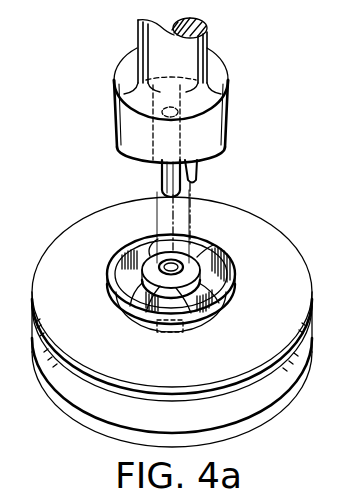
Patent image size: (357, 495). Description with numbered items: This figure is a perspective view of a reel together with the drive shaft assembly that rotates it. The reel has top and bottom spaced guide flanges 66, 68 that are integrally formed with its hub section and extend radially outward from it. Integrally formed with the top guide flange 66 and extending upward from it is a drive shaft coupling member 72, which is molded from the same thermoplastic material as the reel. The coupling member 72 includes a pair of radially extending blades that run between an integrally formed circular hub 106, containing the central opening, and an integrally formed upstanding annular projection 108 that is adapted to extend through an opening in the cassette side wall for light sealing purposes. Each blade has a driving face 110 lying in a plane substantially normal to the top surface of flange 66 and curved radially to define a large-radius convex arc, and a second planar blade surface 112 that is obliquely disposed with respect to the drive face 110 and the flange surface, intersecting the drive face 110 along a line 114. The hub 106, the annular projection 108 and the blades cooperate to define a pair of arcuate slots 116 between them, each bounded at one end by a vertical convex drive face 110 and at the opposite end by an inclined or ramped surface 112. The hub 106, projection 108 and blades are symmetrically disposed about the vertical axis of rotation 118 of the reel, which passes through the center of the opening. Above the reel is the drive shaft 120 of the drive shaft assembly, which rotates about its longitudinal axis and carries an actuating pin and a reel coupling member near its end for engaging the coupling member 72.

The shaft 120 is at (192, 49).
The vertical axis of rotation 118 is at (181, 210).
The second planar blade surface 112 is at (167, 247).
The drive shaft coupling member 72 is at (203, 259).
The arcuate slots 116 is at (213, 272).
The annular projection 108 is at (227, 288).
The top guide flange 66 is at (296, 309).
The bottom guide flange 68 is at (296, 370).
The line 114 is at (158, 238).
The driving face 110 is at (125, 250).
The circular hub 106 is at (143, 275).